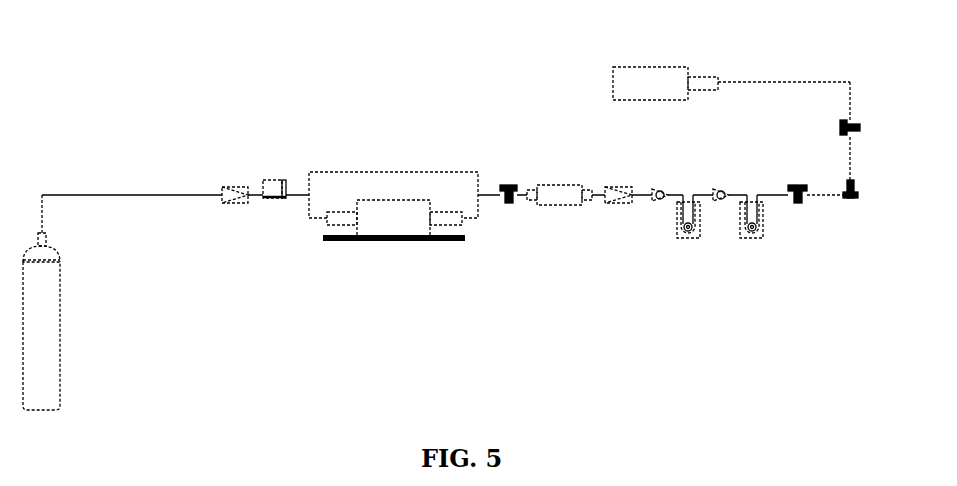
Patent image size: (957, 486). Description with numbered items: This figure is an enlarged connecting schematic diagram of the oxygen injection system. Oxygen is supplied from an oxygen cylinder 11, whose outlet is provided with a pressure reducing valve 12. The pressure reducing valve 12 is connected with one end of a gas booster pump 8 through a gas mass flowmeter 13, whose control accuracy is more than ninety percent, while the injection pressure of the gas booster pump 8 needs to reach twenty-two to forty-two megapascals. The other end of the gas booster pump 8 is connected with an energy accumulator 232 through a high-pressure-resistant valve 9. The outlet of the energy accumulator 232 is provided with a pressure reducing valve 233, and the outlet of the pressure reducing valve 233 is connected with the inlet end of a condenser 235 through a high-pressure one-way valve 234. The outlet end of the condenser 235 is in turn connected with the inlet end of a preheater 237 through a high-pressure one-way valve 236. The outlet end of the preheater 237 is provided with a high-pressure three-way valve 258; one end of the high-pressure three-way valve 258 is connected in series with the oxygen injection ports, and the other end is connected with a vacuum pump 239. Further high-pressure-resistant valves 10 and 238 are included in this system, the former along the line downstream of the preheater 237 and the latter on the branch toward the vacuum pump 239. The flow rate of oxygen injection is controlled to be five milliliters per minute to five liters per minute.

The gas booster pump 8 is at (393, 200).
The high-pressure-resistant valve 9 is at (508, 183).
The high-pressure-resistant valve 10 is at (795, 183).
The oxygen cylinder 11 is at (50, 350).
The pressure reducing valve 12 is at (233, 183).
The gas mass flowmeter 13 is at (268, 178).
The energy accumulator 232 is at (560, 200).
The pressure reducing valve 233 is at (620, 200).
The high-pressure one-way valve 234 is at (660, 200).
The condenser 235 is at (688, 203).
The high-pressure one-way valve 236 is at (722, 190).
The preheater 237 is at (760, 207).
The high-pressure-resistant valve 238 is at (845, 125).
The vacuum pump 239 is at (648, 65).
The high-pressure three-way valve 258 is at (852, 198).